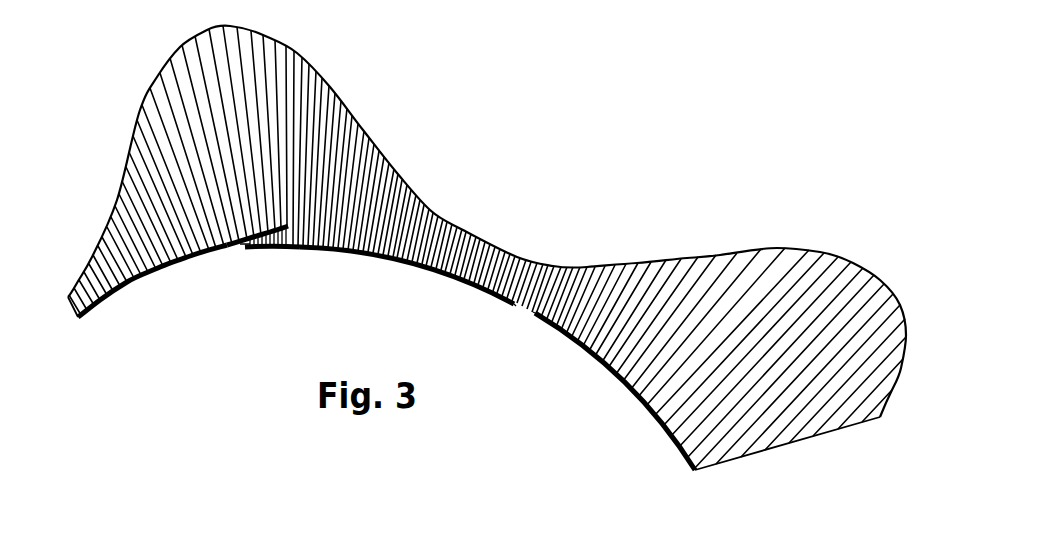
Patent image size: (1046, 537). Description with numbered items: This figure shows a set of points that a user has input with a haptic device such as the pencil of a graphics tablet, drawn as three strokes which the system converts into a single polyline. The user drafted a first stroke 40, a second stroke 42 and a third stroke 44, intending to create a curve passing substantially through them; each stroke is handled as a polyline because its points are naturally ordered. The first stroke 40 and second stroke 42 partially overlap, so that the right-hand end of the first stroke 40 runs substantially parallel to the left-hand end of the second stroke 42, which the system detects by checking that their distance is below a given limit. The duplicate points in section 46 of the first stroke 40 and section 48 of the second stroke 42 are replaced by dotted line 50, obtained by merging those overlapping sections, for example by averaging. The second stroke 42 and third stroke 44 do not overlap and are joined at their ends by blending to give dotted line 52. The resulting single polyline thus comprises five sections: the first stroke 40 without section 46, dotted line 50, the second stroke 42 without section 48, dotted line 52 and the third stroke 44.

The first stroke 40 is at (158, 272).
The second stroke 42 is at (433, 271).
The third stroke 44 is at (626, 382).
The section of first stroke 46 is at (264, 248).
The section of second stroke 48 is at (277, 249).
The dotted line 50 is at (241, 249).
The dotted line 52 is at (530, 318).